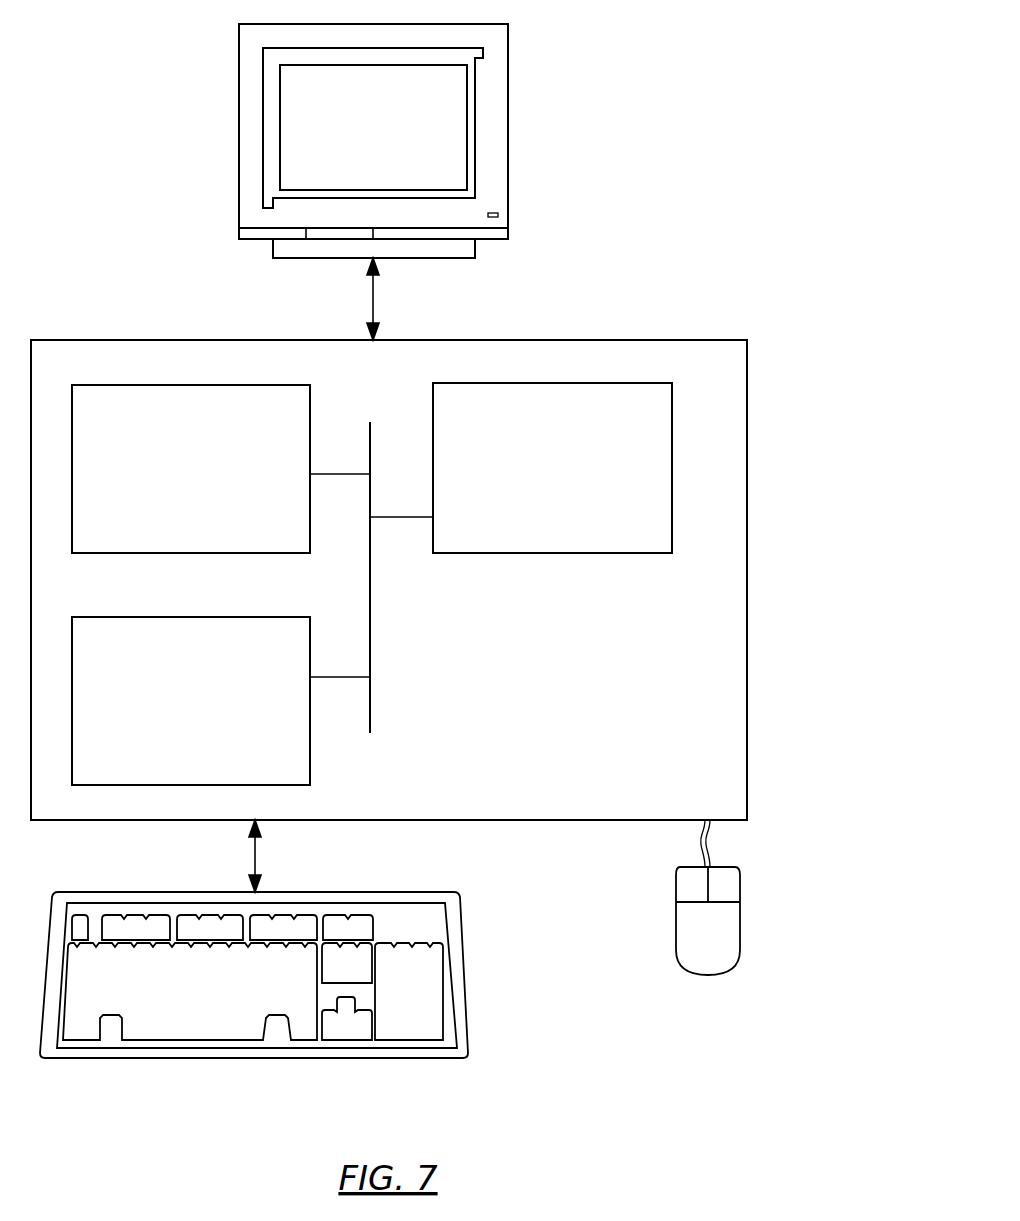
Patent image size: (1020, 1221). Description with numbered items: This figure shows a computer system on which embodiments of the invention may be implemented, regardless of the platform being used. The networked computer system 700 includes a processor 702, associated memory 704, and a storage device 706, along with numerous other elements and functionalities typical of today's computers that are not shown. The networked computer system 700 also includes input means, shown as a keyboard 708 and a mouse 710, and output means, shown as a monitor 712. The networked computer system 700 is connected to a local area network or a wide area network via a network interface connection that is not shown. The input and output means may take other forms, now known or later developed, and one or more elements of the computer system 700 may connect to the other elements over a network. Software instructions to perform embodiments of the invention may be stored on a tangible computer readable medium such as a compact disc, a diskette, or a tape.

The networked computer system 700 is at (748, 233).
The processor 702 is at (526, 491).
The memory 704 is at (169, 498).
The storage device 706 is at (171, 745).
The keyboard 708 is at (172, 1026).
The mouse 710 is at (687, 945).
The monitor 712 is at (351, 160).